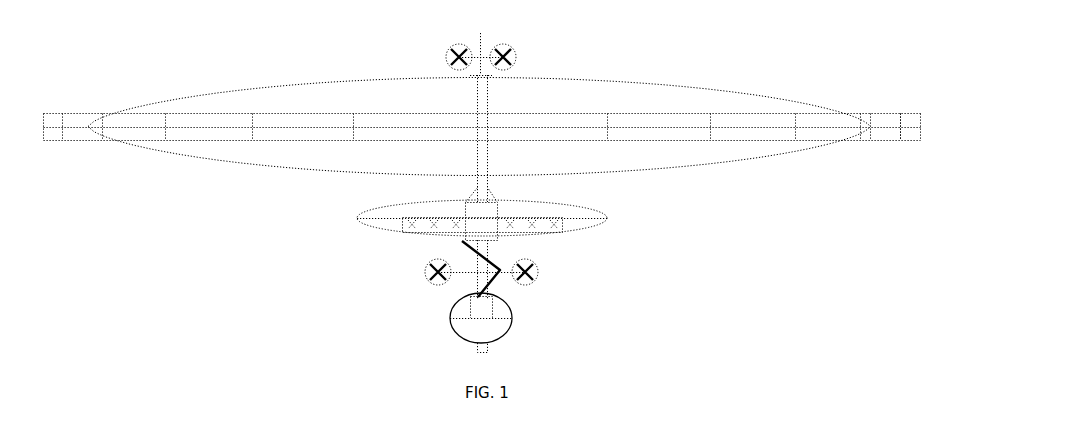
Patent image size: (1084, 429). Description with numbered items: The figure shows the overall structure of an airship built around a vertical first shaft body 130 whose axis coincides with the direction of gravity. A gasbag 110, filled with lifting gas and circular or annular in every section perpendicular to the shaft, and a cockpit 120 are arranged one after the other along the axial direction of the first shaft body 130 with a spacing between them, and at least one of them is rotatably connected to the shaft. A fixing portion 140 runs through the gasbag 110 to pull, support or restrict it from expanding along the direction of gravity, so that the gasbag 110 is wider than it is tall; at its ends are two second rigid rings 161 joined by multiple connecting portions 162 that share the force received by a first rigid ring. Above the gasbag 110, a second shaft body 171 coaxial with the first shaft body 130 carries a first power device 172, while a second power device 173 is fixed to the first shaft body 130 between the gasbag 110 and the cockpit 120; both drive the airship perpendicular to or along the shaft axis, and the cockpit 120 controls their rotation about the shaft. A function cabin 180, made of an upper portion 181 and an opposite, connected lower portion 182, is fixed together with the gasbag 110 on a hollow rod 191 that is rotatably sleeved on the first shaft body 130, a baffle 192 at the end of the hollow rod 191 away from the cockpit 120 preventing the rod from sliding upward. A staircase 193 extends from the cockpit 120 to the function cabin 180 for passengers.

The gasbag 110 is at (652, 92).
The cockpit 120 is at (492, 330).
The first shaft body 130 is at (482, 260).
The fixing portion 140 is at (878, 127).
The second rigid ring 161 is at (876, 112).
The connecting portion 162 is at (900, 118).
The second shaft body 171 is at (482, 37).
The first power device 172 is at (518, 55).
The second power device 173 is at (540, 272).
The function cabin 180 is at (527, 212).
The upper portion 181 is at (572, 209).
The lower portion 182 is at (572, 228).
The hollow rod 191 is at (477, 162).
The baffle 192 is at (506, 73).
The staircase 193 is at (490, 246).